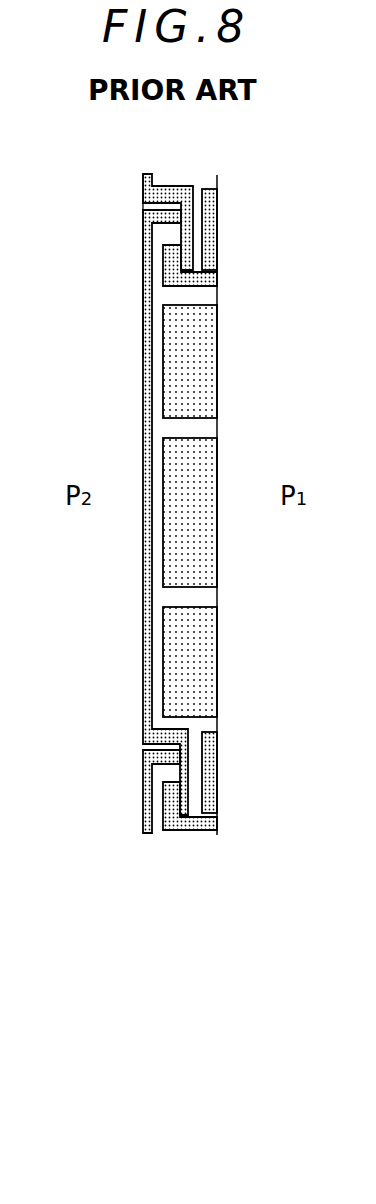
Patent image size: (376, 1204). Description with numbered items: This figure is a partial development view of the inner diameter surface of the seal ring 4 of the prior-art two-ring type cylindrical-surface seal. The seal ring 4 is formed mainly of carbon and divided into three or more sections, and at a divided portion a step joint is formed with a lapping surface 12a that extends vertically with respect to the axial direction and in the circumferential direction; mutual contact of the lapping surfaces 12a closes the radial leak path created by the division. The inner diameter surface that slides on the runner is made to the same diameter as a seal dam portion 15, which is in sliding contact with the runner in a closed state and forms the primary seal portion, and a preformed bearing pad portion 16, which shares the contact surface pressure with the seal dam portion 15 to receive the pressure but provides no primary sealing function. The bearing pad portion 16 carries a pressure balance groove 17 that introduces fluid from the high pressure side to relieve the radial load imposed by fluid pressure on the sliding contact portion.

The seal ring 4 is at (143, 357).
The lapping surface 12a is at (181, 254).
The seal dam portion 15 is at (188, 242).
The bearing pad portion 16 is at (203, 337).
The pressure balance groove 17 is at (217, 208).